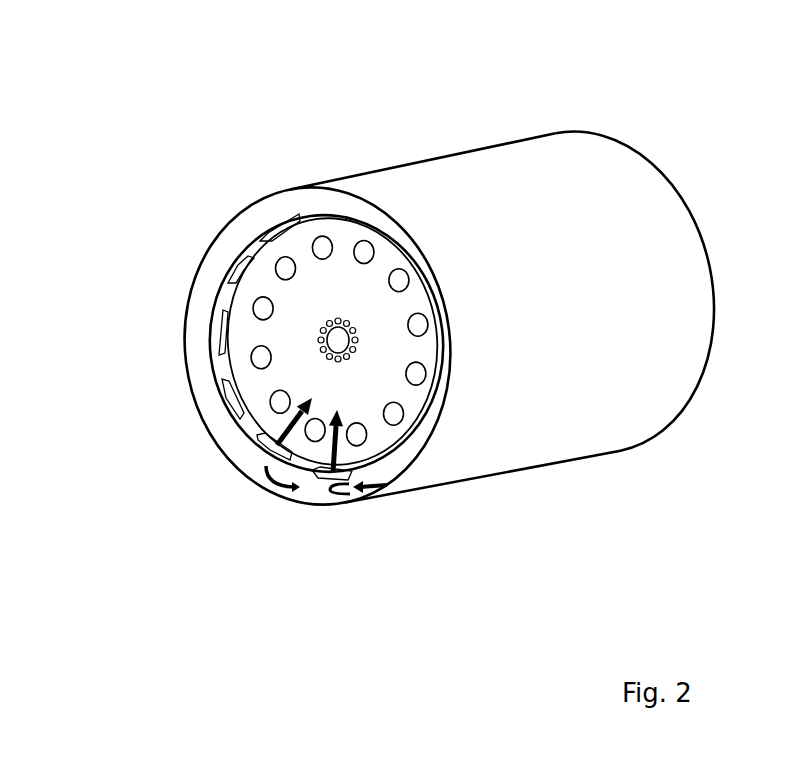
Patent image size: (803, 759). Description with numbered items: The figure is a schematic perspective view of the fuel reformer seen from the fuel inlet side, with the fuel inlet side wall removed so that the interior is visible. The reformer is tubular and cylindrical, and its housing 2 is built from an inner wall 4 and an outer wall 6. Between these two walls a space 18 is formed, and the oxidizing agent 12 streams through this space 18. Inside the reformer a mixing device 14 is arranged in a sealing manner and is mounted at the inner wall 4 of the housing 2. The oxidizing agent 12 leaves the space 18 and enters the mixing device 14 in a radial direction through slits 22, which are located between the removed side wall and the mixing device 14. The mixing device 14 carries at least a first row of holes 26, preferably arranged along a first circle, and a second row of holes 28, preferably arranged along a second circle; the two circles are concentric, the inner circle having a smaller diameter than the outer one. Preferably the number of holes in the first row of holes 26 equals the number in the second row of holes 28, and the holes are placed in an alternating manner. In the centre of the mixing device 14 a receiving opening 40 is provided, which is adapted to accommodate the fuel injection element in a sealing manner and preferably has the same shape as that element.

The housing 2 is at (519, 257).
The inner wall 4 is at (327, 208).
The outer wall 6 is at (527, 160).
The oxidizing agent 12 is at (310, 428).
The mixing device 14 is at (317, 297).
The space 18 is at (313, 492).
The slits 22 is at (222, 340).
The first row of holes 26 is at (345, 334).
The second row of holes 28 is at (283, 266).
The receiving opening 40 is at (346, 352).